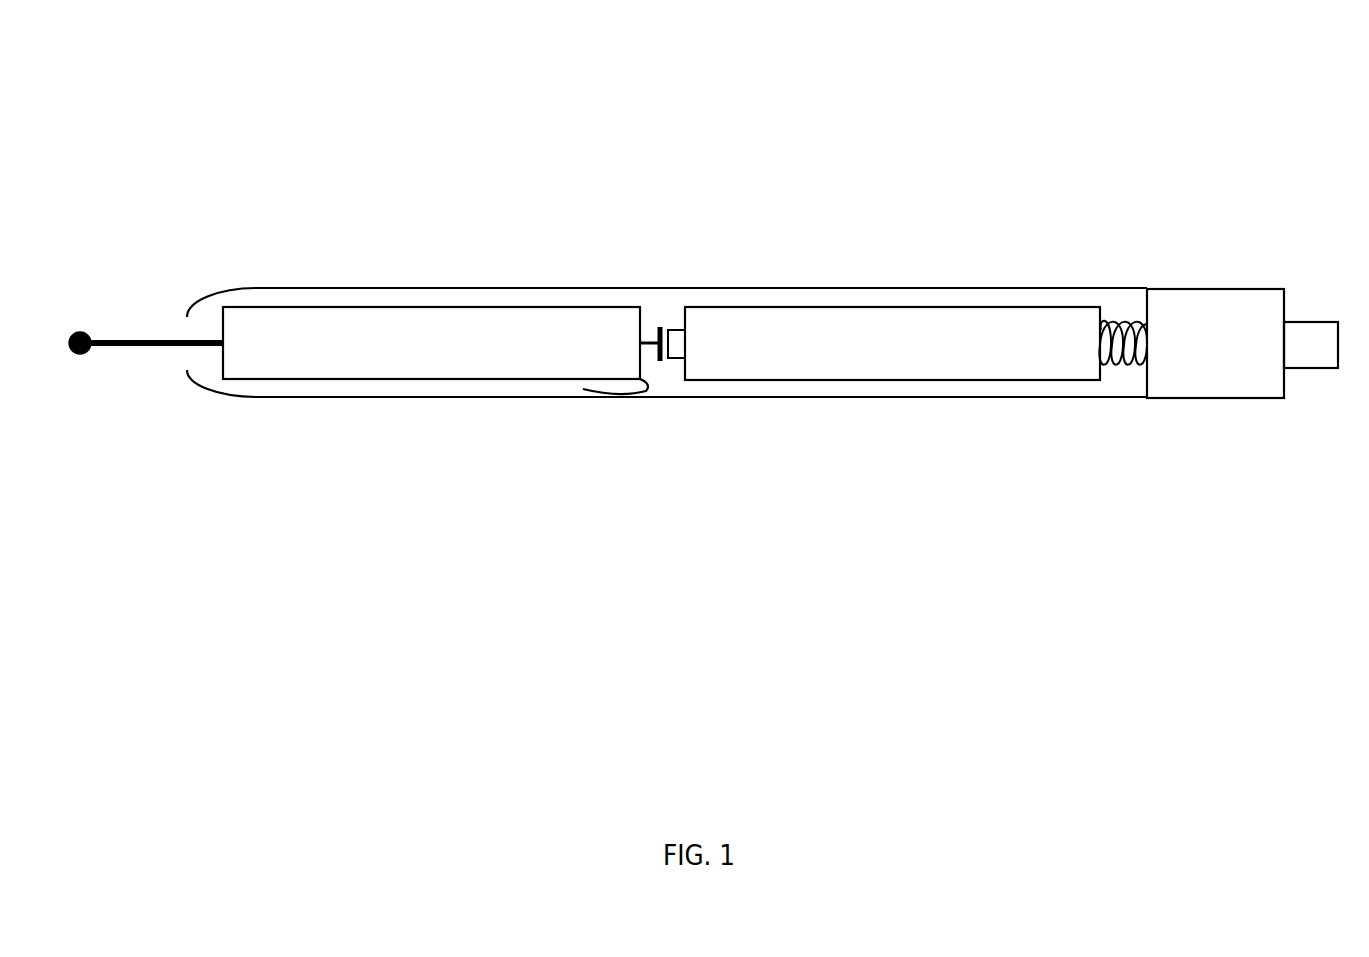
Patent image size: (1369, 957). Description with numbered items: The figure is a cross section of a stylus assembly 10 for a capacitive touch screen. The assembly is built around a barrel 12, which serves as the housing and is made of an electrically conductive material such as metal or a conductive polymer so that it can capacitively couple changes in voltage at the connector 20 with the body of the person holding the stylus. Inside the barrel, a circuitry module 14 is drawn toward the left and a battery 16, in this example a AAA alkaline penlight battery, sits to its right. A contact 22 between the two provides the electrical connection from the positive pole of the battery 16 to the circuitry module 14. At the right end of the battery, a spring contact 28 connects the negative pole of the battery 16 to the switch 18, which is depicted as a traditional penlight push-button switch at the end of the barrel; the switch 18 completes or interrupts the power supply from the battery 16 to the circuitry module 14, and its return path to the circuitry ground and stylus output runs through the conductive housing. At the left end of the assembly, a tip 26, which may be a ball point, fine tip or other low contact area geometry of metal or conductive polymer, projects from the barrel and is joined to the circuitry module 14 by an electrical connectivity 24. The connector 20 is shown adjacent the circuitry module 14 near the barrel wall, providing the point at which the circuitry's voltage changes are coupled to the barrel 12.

The stylus assembly 10 is at (1112, 122).
The barrel 12 is at (892, 400).
The circuitry module 14 is at (287, 323).
The battery 16 is at (733, 332).
The switch 18 is at (1188, 385).
The connector 20 is at (623, 395).
The contact 22 is at (655, 327).
The electrical connectivity 24 is at (140, 348).
The tip 26 is at (82, 332).
The spring contact 28 is at (1120, 320).